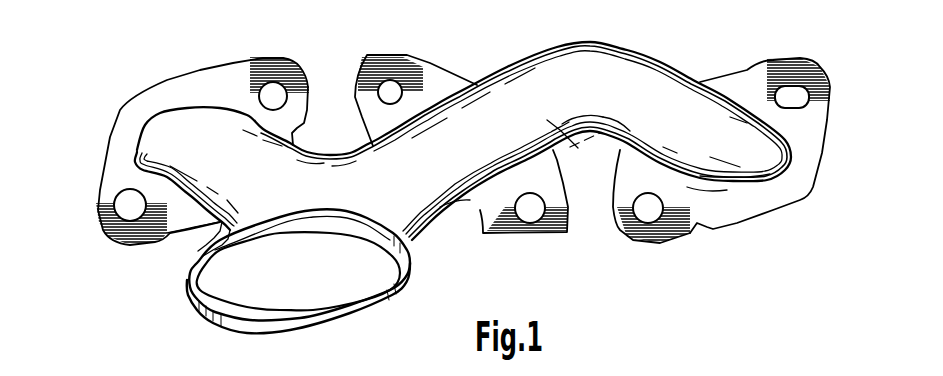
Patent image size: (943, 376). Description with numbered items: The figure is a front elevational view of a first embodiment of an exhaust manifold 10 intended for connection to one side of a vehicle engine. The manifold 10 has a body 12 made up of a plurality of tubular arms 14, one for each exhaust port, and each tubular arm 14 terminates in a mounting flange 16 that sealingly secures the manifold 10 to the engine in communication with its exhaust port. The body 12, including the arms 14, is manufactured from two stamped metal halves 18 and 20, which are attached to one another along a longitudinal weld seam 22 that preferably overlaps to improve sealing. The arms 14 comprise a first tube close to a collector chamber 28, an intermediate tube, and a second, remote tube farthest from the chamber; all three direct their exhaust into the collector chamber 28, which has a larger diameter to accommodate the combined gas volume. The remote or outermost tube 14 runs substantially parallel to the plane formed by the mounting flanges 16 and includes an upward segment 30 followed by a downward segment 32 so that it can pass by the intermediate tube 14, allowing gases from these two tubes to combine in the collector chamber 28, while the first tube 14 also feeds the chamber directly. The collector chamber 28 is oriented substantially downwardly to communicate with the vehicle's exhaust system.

The exhaust manifold 10 is at (172, 300).
The body 12 is at (410, 212).
The tubular arm 14 is at (183, 127).
The mounting flange 16 is at (113, 157).
The stamped half 18 is at (590, 137).
The stamped half 20 is at (593, 137).
The longitudinal weld seam 22 is at (183, 193).
The collector chamber 28 is at (310, 282).
The upward segment 30 is at (678, 94).
The downward segment 32 is at (499, 88).